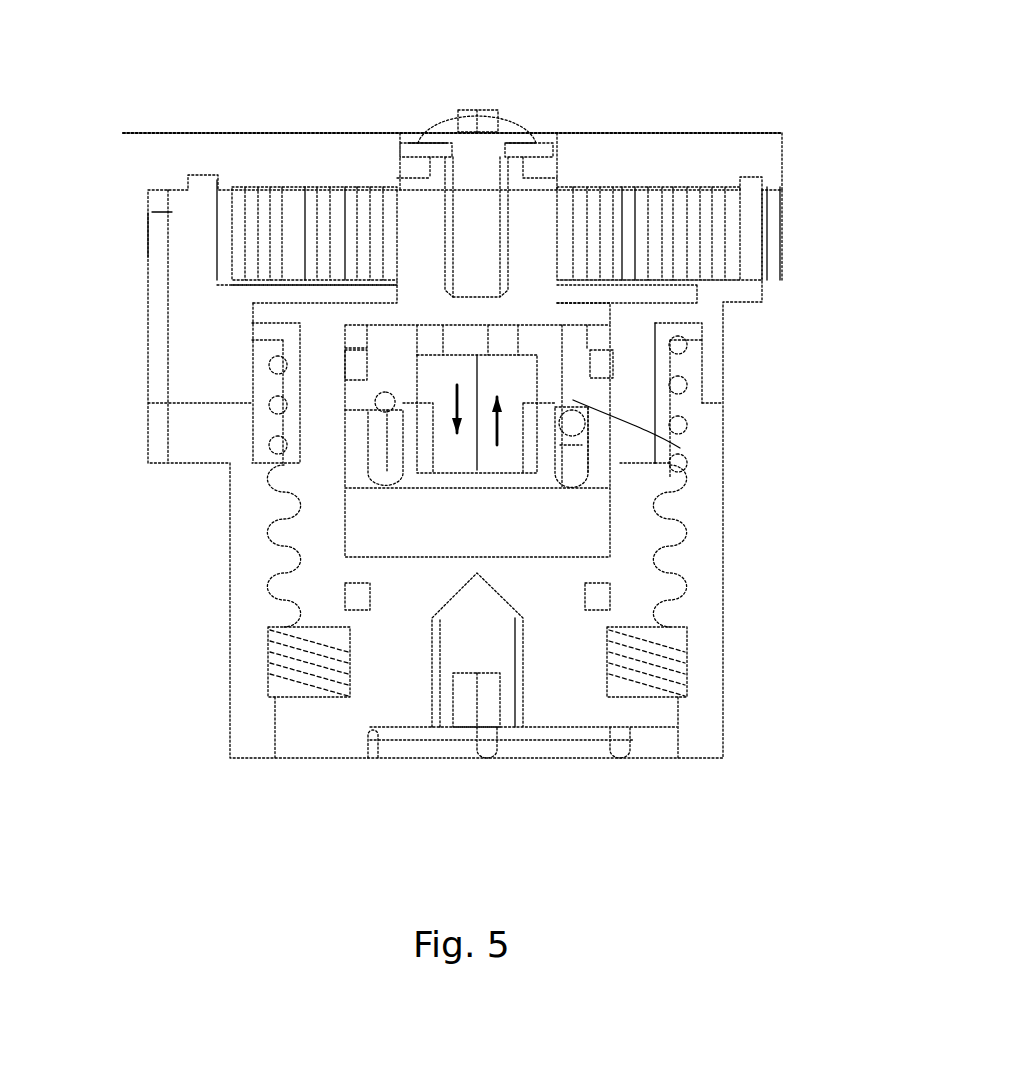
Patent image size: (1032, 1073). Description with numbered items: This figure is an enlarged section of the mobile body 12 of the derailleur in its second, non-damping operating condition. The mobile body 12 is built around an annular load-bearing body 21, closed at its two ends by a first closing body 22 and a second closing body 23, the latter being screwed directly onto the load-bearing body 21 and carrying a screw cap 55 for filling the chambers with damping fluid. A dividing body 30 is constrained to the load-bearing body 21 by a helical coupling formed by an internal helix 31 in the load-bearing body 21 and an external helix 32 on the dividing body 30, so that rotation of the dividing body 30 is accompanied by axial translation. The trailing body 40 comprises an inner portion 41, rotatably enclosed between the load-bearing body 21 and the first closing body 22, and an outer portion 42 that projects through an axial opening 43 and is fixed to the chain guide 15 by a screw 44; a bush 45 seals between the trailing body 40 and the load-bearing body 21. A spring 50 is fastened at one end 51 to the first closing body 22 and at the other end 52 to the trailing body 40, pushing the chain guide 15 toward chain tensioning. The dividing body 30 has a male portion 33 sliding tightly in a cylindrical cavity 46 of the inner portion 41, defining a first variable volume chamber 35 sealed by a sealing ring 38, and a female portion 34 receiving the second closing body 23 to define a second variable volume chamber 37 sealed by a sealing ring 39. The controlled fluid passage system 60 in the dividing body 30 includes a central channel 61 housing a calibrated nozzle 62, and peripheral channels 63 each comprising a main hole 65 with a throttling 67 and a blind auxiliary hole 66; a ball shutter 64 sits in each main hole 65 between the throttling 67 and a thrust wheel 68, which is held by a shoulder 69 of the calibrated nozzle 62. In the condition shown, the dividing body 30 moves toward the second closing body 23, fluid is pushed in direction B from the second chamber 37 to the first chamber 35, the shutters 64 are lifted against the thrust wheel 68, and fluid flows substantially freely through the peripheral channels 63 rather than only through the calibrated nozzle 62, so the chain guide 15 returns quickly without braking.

The mobile body 12 is at (160, 127).
The chain guide 15 is at (145, 168).
The trailing body 40 is at (393, 277).
The other end of the spring 52 is at (417, 228).
The outer portion 42 is at (540, 260).
The axial opening 43 is at (553, 227).
The screw 44 is at (520, 127).
The controlled fluid passage system 60 is at (547, 313).
The spring 50 is at (619, 227).
The first variable volume chamber 35 is at (477, 342).
The first closing body 22 is at (750, 218).
The end of the spring 51 is at (773, 243).
The male portion 33 is at (600, 335).
The cylindrical cavity 46 is at (347, 340).
The bush 45 is at (288, 370).
The inner portion 41 is at (315, 407).
The dividing body 30 is at (312, 450).
The sealing ring 38 is at (605, 368).
The thrust wheel 68 is at (583, 443).
The auxiliary hole 66 is at (657, 478).
The shoulder 69 is at (397, 410).
The female portion 34 is at (313, 560).
The mobile shutter 64 is at (381, 428).
The throttling 67 is at (390, 423).
The main hole 65 is at (400, 447).
The central channel 61 is at (433, 452).
The calibrated nozzle 62 is at (477, 462).
The load-bearing body 21 is at (670, 547).
The peripheral channel 63 is at (591, 457).
The external helix 32 is at (350, 600).
The second variable volume chamber 37 is at (600, 546).
The sealing ring 39 is at (345, 598).
The internal helix 31 is at (273, 690).
The screw cap 55 is at (507, 700).
The second closing body 23 is at (600, 730).